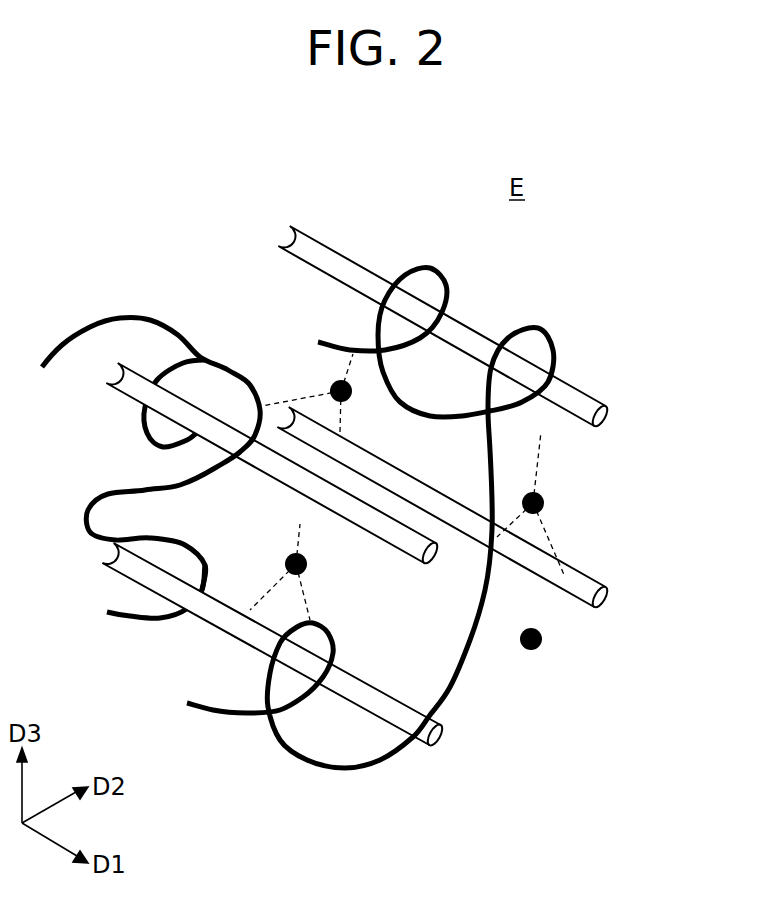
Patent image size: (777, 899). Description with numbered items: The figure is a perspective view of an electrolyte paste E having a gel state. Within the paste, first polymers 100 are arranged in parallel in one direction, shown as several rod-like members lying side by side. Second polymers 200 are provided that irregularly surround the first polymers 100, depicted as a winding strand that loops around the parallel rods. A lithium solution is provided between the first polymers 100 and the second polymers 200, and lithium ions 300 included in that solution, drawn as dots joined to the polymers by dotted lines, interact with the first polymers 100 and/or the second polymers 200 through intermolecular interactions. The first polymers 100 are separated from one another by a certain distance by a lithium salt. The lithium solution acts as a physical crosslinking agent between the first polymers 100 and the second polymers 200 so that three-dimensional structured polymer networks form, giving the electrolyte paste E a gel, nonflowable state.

The first polymers 100 is at (584, 400).
The second polymers 200 is at (541, 323).
The lithium ions 300 is at (543, 641).